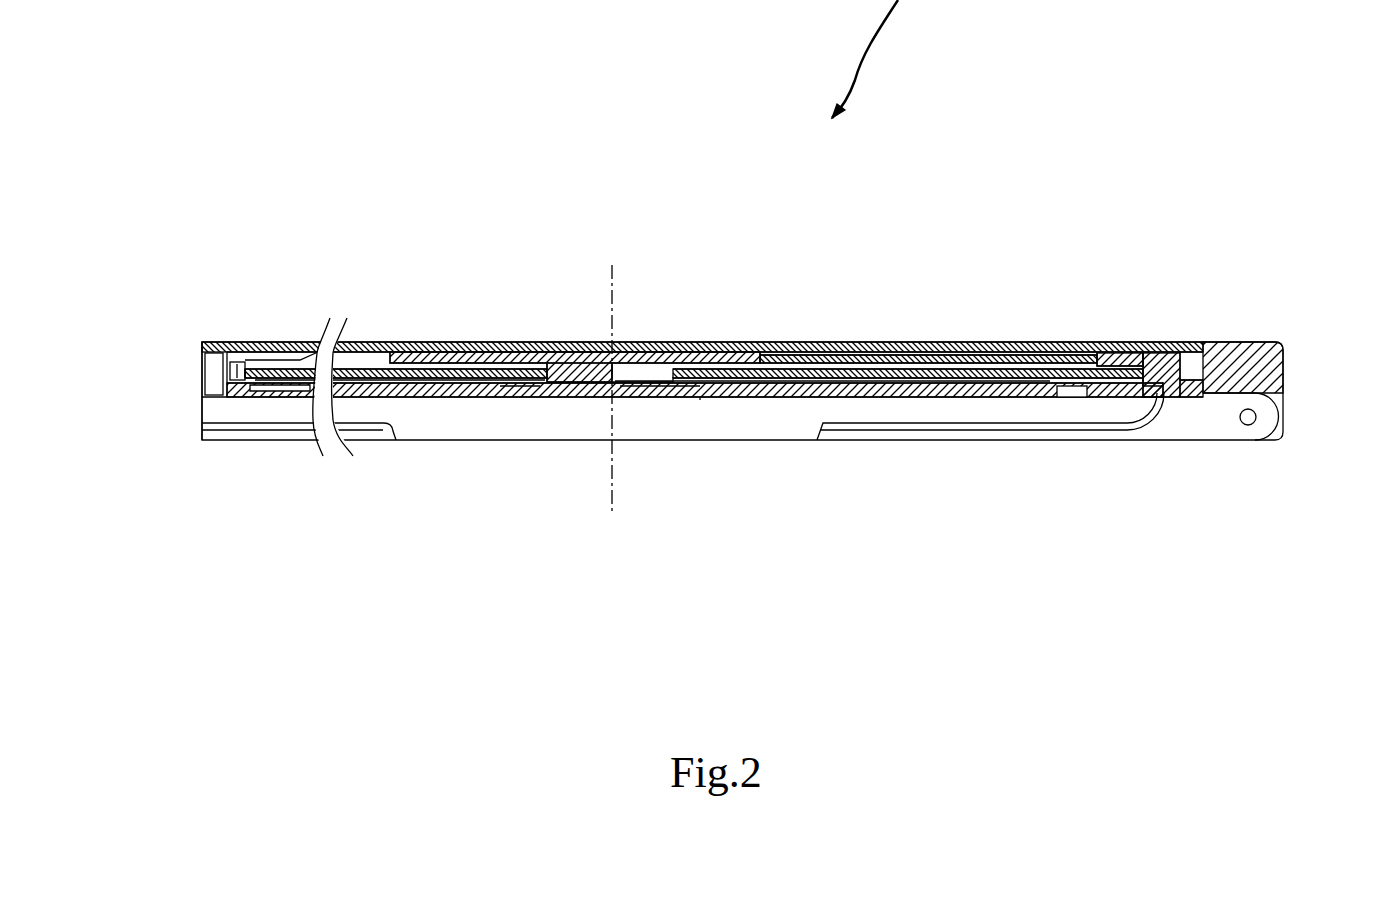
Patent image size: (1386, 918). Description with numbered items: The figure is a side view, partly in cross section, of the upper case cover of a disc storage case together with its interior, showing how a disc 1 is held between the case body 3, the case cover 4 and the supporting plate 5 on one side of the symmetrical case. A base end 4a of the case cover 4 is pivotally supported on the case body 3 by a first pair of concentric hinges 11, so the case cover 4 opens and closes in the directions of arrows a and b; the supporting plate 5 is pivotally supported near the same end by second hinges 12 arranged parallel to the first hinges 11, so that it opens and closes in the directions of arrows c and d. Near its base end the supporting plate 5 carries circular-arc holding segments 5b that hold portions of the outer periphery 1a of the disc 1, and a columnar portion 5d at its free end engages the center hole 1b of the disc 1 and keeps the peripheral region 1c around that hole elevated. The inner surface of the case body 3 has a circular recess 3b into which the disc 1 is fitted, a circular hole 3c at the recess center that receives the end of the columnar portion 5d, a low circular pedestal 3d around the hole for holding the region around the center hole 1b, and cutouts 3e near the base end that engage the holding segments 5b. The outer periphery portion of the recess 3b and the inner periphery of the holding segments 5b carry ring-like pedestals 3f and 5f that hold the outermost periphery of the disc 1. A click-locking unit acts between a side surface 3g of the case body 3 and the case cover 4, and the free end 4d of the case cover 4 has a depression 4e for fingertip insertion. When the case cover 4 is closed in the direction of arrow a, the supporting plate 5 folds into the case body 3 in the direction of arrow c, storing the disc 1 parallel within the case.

The disc 1 is at (908, 342).
The outer periphery 1a is at (267, 342).
The center hole 1b is at (583, 395).
The peripheral region 1c is at (498, 402).
The case body 3 is at (775, 395).
The circular recess 3b is at (360, 447).
The circular hole 3c is at (678, 395).
The circular pedestal 3d is at (520, 395).
The cutouts 3e is at (1068, 395).
The ring-like pedestal 3f is at (260, 397).
The side surface 3g is at (740, 420).
The case cover 4 is at (390, 342).
The base end 4a is at (1228, 342).
The free end 4d is at (202, 342).
The depression 4e is at (210, 370).
The supporting plate 5 is at (515, 342).
The circular-arc holding segments 5b is at (1140, 395).
The columnar portion 5d is at (653, 340).
The ring-like pedestal 5f is at (1117, 342).
The first hinges 11 is at (1257, 417).
The second hinges 12 is at (1172, 342).
The arrow a is at (245, 283).
The arrow b is at (272, 287).
The arrow c is at (633, 287).
The arrow d is at (660, 287).